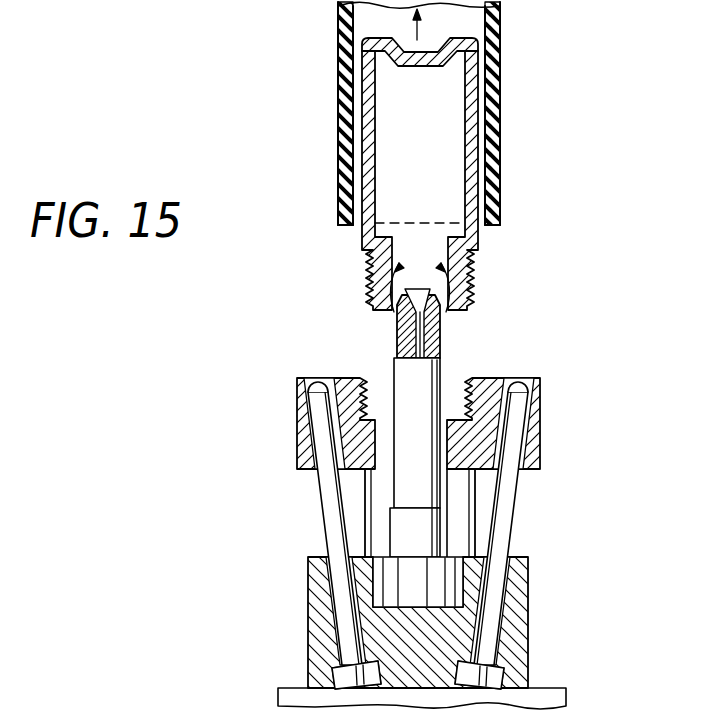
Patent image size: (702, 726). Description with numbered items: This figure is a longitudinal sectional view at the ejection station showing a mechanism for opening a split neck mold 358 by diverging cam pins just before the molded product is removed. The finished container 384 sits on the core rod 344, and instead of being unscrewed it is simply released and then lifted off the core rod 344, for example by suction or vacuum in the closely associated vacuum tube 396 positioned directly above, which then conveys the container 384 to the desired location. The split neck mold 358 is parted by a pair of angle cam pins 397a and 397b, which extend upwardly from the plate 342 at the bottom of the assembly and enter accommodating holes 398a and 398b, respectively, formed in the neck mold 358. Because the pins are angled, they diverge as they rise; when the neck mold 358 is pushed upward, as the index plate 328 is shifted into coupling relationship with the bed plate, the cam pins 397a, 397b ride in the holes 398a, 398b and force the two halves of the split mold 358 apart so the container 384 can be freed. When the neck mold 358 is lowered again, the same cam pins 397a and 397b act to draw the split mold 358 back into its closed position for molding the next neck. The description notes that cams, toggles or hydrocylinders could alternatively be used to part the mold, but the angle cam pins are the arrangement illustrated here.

The vacuum tube 396 is at (338, 122).
The finished container 384 is at (470, 103).
The core rod 344 is at (436, 342).
The split neck mold 358 is at (541, 428).
The plate 342 is at (315, 580).
The index plate 328 is at (282, 688).
The angle cam pin 397a is at (333, 503).
The angle cam pin 397b is at (510, 524).
The accommodating hole 398a is at (320, 381).
The accommodating hole 398b is at (526, 381).